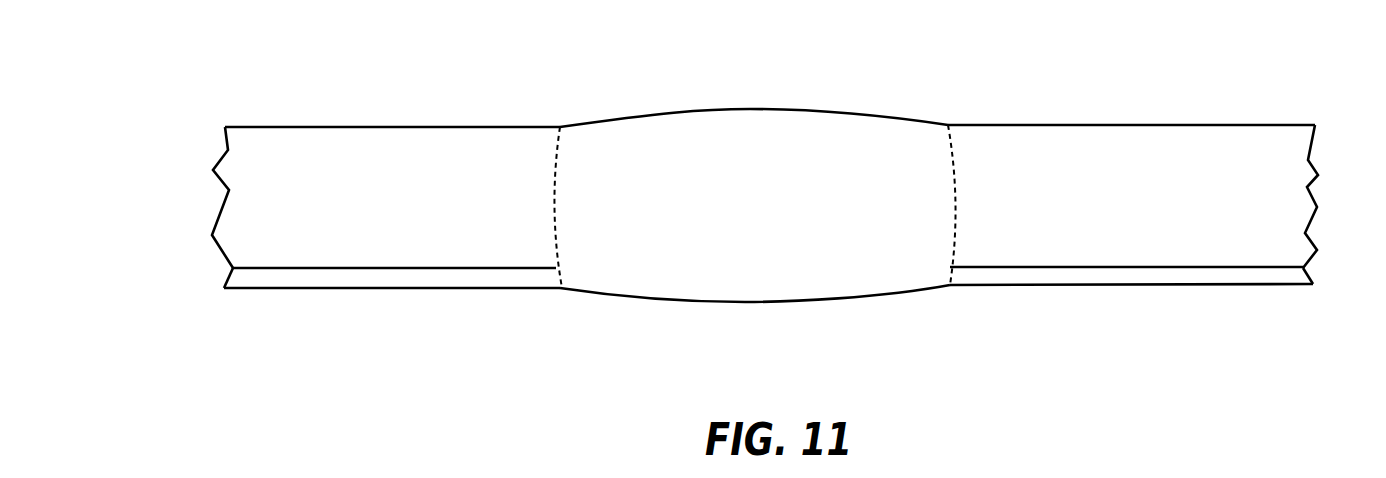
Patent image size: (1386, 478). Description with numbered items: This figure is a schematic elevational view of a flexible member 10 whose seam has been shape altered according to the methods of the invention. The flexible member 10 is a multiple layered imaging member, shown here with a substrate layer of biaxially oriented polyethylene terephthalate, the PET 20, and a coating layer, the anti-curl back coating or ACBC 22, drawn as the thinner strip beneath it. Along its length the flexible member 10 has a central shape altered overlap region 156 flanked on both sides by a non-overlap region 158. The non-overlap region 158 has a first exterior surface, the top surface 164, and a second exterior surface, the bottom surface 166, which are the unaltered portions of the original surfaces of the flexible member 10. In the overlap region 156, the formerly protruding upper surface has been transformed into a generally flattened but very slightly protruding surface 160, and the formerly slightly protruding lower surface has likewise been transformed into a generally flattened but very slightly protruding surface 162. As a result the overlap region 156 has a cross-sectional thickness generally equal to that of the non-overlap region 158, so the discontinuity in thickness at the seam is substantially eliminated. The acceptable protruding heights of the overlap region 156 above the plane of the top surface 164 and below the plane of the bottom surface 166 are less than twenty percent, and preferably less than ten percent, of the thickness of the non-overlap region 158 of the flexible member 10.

The flexible member 10 is at (221, 65).
The PET 20 is at (238, 210).
The ACBC 22 is at (242, 282).
The shape altered overlap region 156 is at (830, 58).
The non-overlap region 158 is at (371, 111).
The generally flattened but very slightly protruding surface 160 is at (748, 108).
The generally flattened but very slightly protruding surface 162 is at (748, 303).
The top surface 164 is at (435, 126).
The bottom surface 166 is at (400, 294).